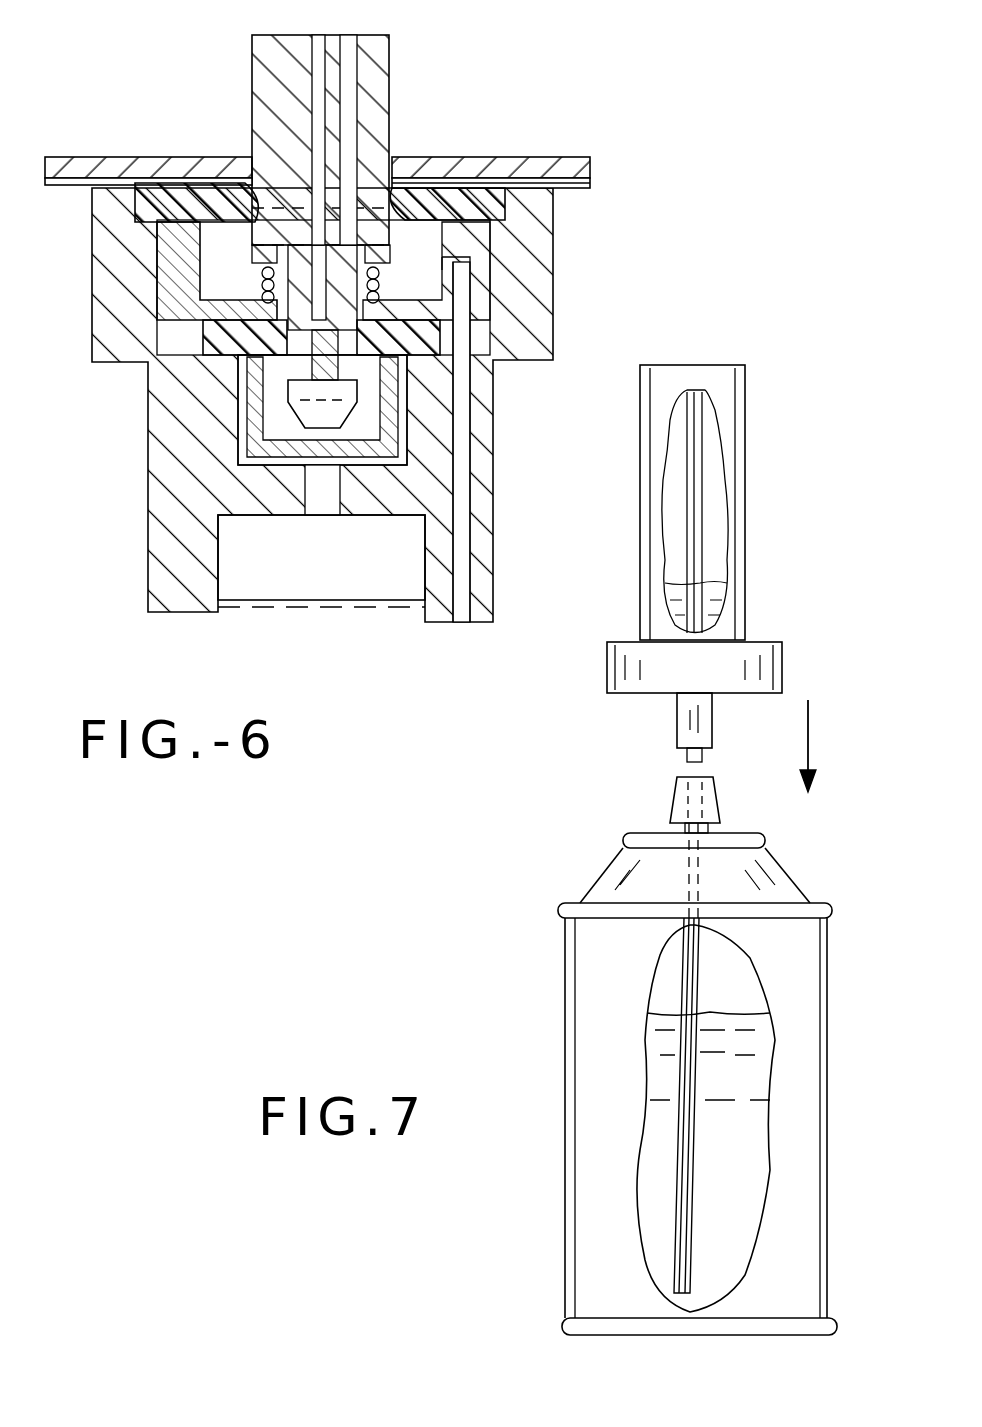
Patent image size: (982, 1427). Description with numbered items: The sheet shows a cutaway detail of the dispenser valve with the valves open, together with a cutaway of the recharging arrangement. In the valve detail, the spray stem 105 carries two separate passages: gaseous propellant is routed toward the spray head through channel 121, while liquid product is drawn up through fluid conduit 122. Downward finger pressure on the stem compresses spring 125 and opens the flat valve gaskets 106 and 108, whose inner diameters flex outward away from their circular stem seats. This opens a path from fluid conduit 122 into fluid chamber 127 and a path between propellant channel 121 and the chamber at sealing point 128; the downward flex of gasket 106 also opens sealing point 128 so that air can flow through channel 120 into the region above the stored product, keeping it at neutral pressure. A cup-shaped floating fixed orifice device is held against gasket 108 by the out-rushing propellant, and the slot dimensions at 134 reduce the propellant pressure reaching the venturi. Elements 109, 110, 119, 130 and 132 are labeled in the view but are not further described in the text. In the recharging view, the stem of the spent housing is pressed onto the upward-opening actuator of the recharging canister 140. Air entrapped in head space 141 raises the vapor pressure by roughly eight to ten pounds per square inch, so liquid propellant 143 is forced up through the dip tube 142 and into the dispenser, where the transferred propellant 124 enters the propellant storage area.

In FIG. 6, the spray stem 105 is at (252, 72).
In FIG. 7, the spray stem 105 is at (677, 725).
In FIG. 6, the valve gasket 106 is at (95, 215).
In FIG. 6, the valve gasket 108 is at (205, 340).
In FIG. 6, the valve cup 109 is at (407, 430).
In FIG. 7, the tube 110 is at (700, 492).
In FIG. 6, the left mounting plate 119 is at (190, 157).
In FIG. 6, the channel 120 is at (490, 178).
In FIG. 6, the propellant channel 121 is at (317, 94).
In FIG. 6, the fluid conduit 122 is at (348, 62).
In FIG. 6, the transferred propellant 124 is at (410, 607).
In FIG. 7, the transferred propellant 124 is at (717, 597).
In FIG. 6, the spring 125 is at (445, 285).
In FIG. 6, the fluid chamber 127 is at (403, 547).
In FIG. 6, the sealing point 128 is at (398, 180).
In FIG. 6, the valve body 130 is at (148, 475).
In FIG. 6, the cup 132 is at (150, 280).
In FIG. 6, the slot 134 is at (390, 382).
In FIG. 7, the recharging canister 140 is at (825, 1000).
In FIG. 7, the head space 141 is at (720, 965).
In FIG. 7, the dip tube 142 is at (697, 1152).
In FIG. 7, the liquid propellant 143 is at (753, 1042).